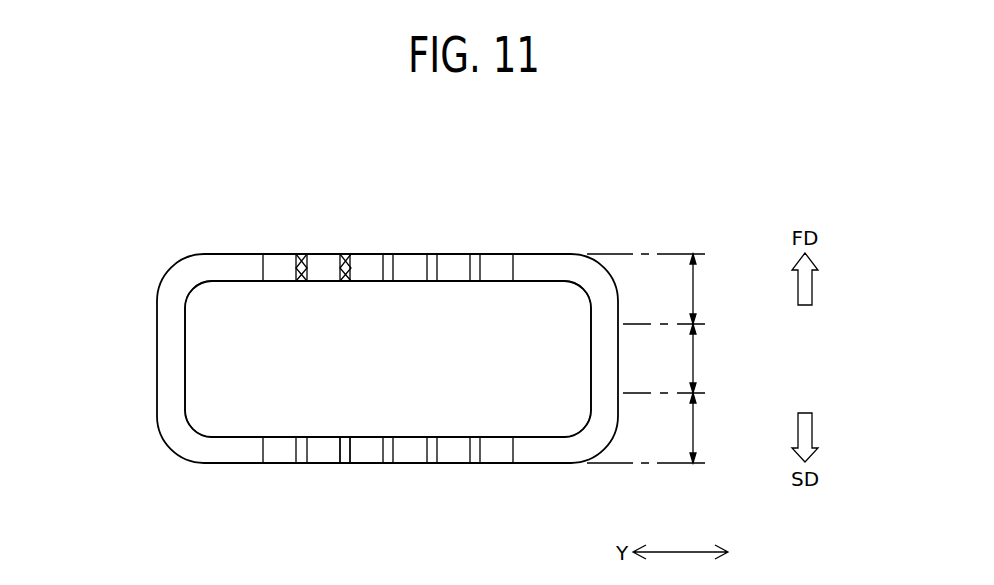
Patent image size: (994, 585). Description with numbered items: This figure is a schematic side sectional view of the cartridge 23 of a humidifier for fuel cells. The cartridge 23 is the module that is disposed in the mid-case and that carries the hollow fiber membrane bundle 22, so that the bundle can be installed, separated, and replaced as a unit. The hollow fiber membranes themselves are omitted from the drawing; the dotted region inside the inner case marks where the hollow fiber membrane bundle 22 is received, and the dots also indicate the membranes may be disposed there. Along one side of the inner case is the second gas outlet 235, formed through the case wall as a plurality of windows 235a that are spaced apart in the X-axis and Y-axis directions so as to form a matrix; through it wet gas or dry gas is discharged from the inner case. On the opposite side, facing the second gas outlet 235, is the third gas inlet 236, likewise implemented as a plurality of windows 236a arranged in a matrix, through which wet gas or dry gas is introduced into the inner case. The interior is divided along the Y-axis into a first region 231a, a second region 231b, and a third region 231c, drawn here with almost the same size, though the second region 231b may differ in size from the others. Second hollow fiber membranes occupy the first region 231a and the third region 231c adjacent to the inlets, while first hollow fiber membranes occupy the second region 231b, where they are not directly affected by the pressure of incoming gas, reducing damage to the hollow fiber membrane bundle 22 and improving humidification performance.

The cartridge 23 is at (160, 170).
The hollow fiber membrane bundle 22 is at (221, 442).
The second gas outlet 235 is at (493, 243).
The windows 235a is at (315, 266).
The third gas inlet 236 is at (494, 476).
The windows 236a is at (378, 451).
The first region 231a is at (720, 289).
The second region 231b is at (720, 358).
The third region 231c is at (719, 428).